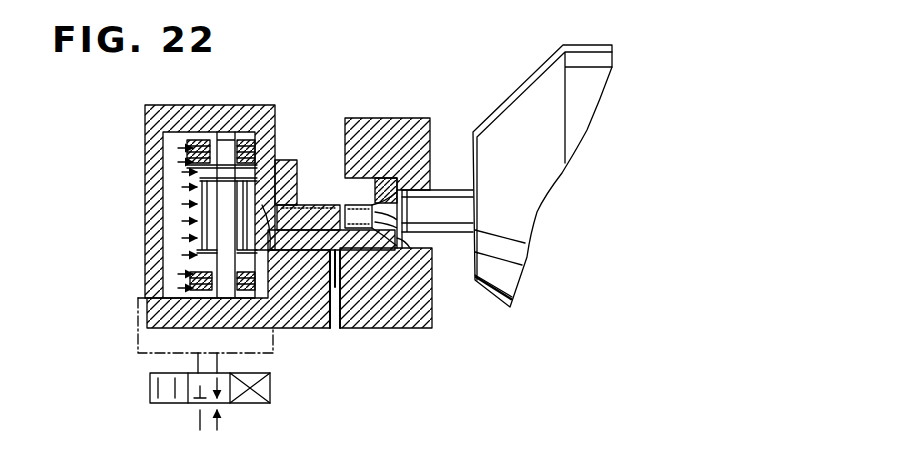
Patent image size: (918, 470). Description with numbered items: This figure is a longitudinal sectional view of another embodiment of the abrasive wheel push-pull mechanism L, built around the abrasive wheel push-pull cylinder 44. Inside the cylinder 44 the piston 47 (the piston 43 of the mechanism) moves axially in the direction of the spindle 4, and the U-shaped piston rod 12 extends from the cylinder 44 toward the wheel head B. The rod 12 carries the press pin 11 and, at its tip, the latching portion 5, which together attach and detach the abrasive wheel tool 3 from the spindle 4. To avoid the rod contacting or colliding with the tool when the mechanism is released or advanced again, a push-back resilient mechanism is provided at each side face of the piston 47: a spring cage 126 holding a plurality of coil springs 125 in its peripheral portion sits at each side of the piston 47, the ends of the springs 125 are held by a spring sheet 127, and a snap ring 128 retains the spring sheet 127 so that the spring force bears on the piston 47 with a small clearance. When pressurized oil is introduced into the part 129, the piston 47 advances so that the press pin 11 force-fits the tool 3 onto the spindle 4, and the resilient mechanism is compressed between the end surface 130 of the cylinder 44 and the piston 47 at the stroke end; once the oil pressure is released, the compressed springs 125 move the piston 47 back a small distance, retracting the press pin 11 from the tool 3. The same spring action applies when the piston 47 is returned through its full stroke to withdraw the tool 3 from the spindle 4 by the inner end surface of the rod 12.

The abrasive wheel push-pull cylinder 44 is at (165, 117).
The piston 47 is at (222, 138).
The end surface of the cylinder 130 is at (251, 128).
The coil springs 125 is at (186, 152).
The spring sheet 127 is at (190, 170).
The snap ring 128 is at (205, 214).
The part 129 is at (160, 294).
The spring cage 126 is at (202, 290).
The piston 43 is at (283, 168).
The press pin 11 is at (313, 216).
The piston rod 12 is at (360, 250).
The latching portion 5 is at (385, 182).
The abrasive wheel tool 3 is at (386, 248).
The spindle 4 is at (404, 247).
The wheel head B is at (490, 130).
The abrasive wheel push-pull mechanism L is at (320, 322).